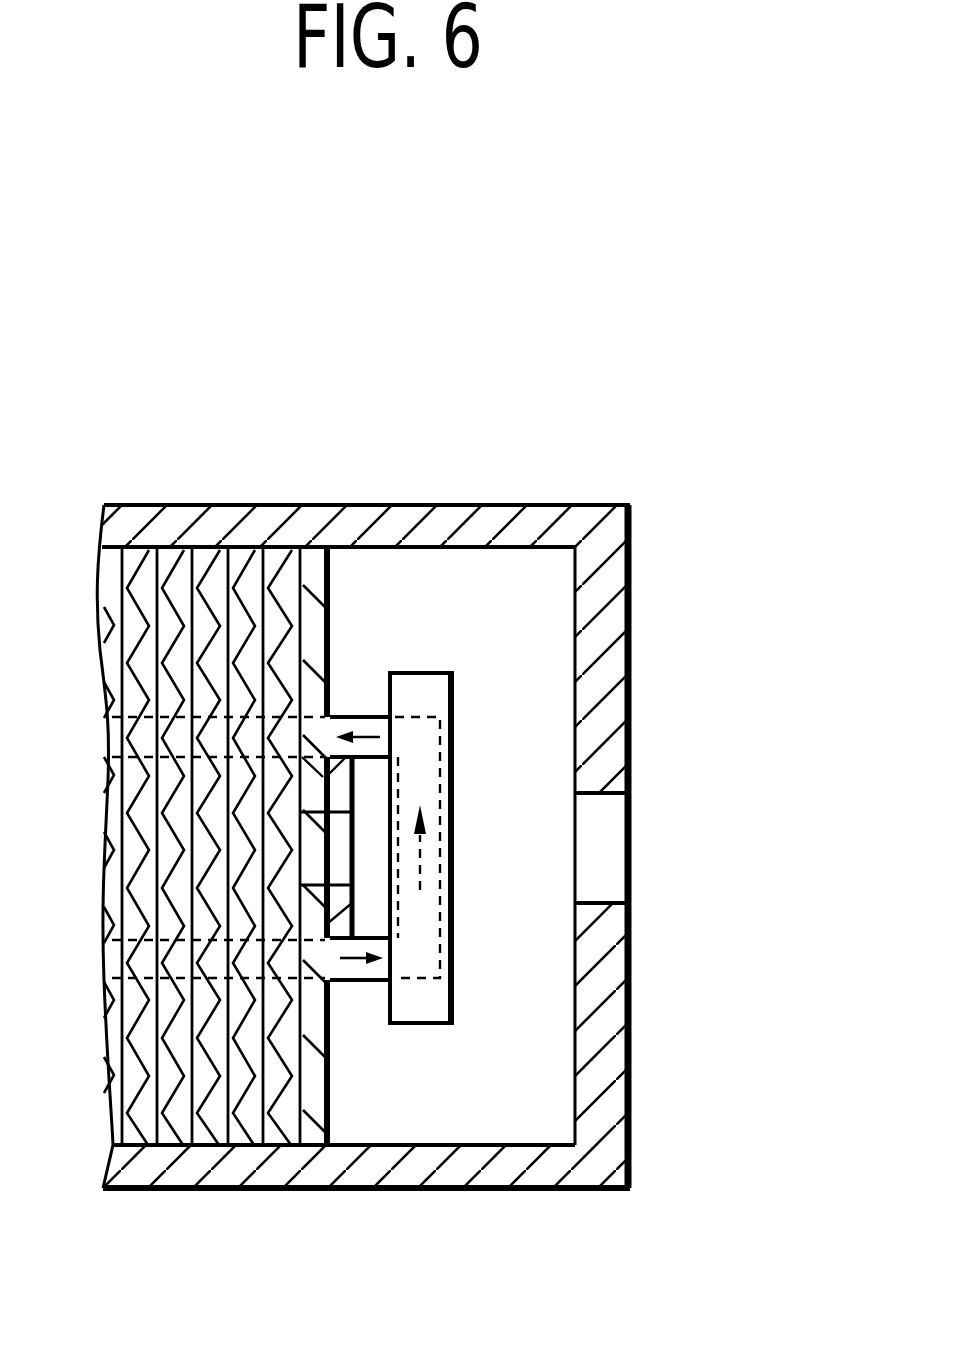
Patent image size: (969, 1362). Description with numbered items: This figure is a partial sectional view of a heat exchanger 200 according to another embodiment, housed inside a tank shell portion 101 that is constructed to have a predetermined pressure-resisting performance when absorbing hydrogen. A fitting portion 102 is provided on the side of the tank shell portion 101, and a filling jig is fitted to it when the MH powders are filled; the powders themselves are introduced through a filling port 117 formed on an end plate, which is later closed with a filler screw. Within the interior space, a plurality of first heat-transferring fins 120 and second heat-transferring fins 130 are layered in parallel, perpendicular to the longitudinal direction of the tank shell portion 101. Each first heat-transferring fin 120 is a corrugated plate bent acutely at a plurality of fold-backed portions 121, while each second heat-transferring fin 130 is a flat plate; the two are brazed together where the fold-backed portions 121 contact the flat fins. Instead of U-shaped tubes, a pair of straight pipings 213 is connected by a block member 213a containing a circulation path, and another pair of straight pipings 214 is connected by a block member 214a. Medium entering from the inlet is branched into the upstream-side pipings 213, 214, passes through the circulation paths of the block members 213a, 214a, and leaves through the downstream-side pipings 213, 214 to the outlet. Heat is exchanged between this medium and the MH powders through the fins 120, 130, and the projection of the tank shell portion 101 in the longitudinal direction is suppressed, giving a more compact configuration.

The heat exchanger 200 is at (415, 807).
The tank shell portion 101 is at (613, 600).
The fitting portion 102 is at (597, 797).
The second heat-transferring fin 130 is at (190, 757).
The first heat-transferring fin 120 is at (222, 660).
The fold-backed portion 121 is at (165, 650).
The filling port 117 is at (312, 885).
The piping 213 is at (390, 807).
The piping 214 is at (360, 717).
The block member 213a is at (511, 700).
The block member 214a is at (428, 673).